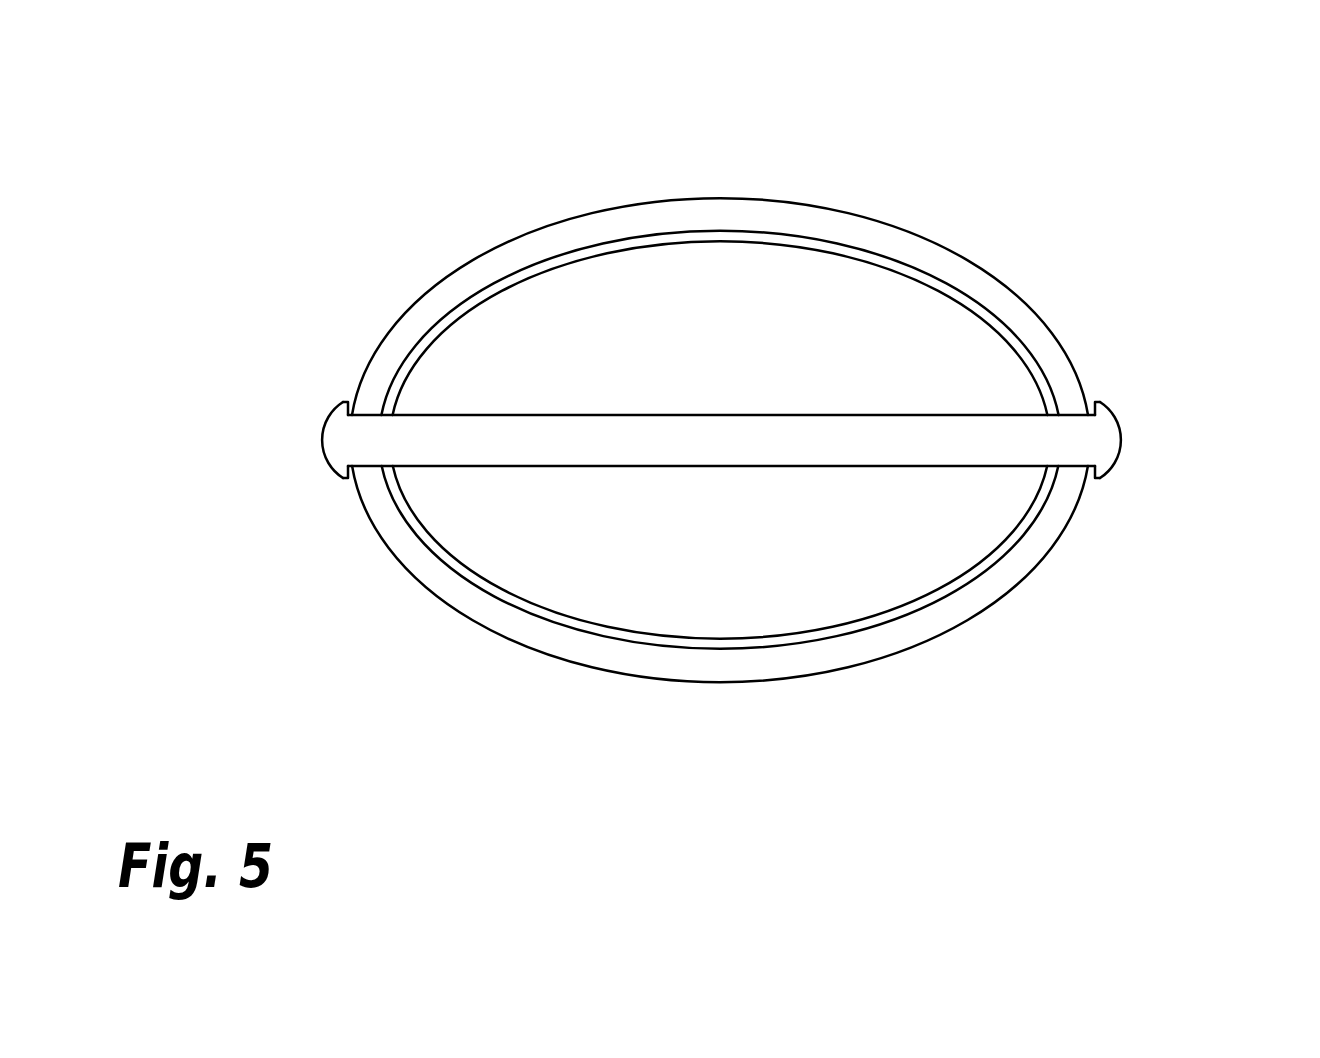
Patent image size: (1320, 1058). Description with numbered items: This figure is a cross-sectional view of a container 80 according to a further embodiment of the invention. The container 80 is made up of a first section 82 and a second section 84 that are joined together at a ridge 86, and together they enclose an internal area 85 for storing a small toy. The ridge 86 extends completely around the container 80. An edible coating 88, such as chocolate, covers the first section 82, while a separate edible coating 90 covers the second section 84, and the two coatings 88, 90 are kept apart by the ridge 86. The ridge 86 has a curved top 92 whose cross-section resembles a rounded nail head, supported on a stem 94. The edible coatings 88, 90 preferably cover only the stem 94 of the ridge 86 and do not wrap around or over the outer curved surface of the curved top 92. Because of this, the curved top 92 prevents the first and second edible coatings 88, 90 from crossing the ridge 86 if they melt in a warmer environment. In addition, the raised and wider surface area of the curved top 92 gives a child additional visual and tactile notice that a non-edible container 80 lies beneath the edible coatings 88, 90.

The container 80 is at (1185, 94).
The first section 82 is at (785, 240).
The second section 84 is at (808, 643).
The internal area 85 is at (624, 296).
The ridge 86 is at (480, 435).
The edible coating 88 is at (937, 260).
The edible coating 90 is at (588, 647).
The curved top 92 is at (337, 448).
The stem 94 is at (383, 432).